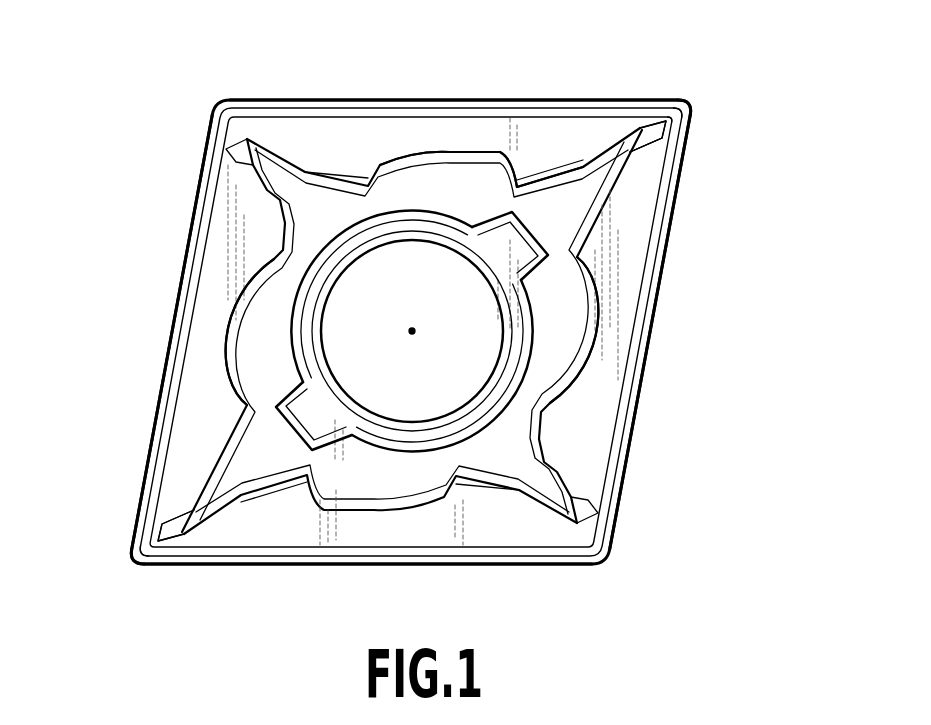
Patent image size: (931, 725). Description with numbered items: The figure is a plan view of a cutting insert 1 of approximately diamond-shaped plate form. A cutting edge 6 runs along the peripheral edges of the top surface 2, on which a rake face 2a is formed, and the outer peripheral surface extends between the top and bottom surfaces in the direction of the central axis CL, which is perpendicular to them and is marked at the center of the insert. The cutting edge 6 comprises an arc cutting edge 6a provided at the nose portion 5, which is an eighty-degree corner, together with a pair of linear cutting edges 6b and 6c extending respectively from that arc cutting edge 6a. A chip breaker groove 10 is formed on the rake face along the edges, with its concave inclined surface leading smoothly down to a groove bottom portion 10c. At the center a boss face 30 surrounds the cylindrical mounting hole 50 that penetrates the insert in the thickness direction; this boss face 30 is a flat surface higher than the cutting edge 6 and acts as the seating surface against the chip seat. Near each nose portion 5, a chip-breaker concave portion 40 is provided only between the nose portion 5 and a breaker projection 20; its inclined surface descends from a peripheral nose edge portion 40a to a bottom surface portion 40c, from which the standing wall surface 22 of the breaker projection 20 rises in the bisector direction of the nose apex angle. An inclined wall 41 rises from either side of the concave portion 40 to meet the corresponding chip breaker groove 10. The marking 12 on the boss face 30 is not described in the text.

The cutting insert 1 is at (445, 97).
The top surface 2 is at (386, 190).
The rake face 2a is at (155, 524).
The nose portion 5 is at (668, 100).
The cutting edge 6 is at (478, 565).
The arc cutting edge 6a is at (688, 112).
The linear cutting edge 6b is at (503, 104).
The linear cutting edge 6c is at (189, 238).
The chip breaker groove 10 is at (628, 265).
The bottom surface portion of chip breaker groove 10c is at (548, 140).
The indicia / marking portion 12 is at (412, 331).
The breaker projection 20 is at (607, 172).
The standing wall surface 22 is at (612, 128).
The boss face 30 is at (415, 182).
The chip-breaker concave portion 40 is at (647, 126).
The peripheral nose edge portion 40a is at (686, 110).
The bottom surface portion of chip-breaker concave portion 40c is at (690, 130).
The inclined wall 41 is at (655, 158).
The mounting hole 50 is at (426, 415).
The central axis CL is at (412, 331).